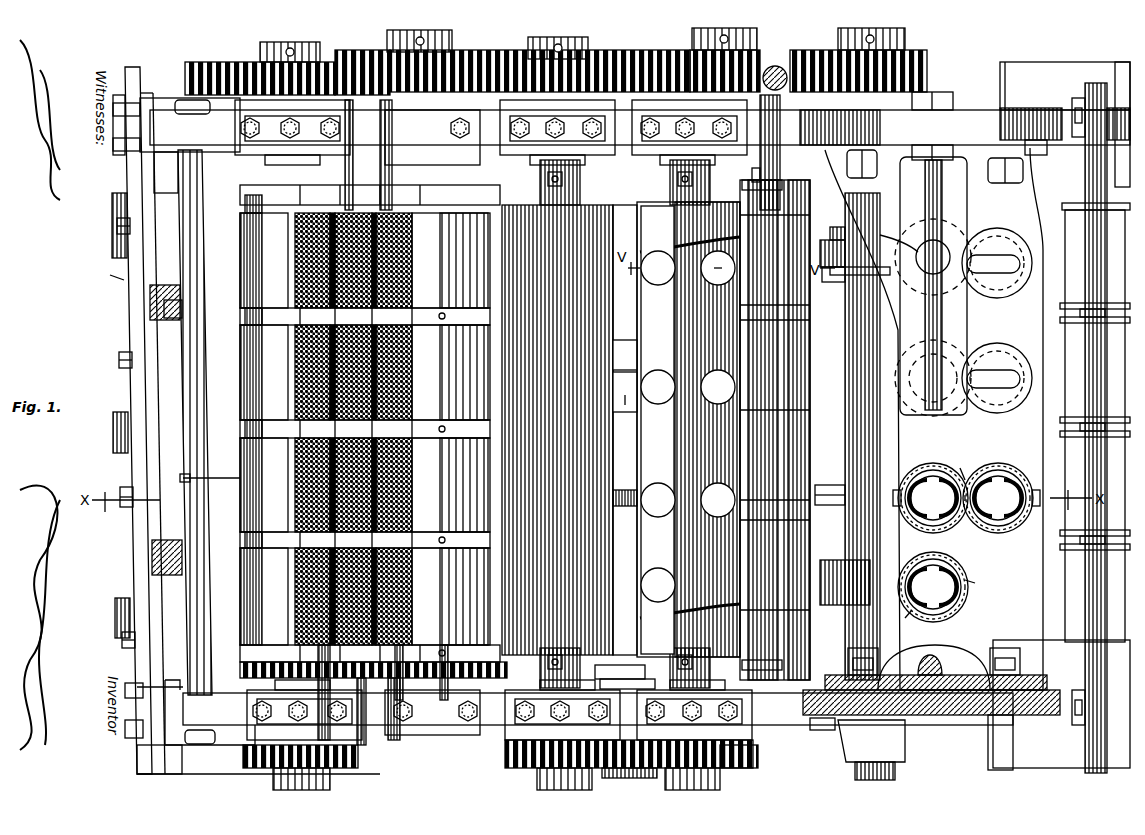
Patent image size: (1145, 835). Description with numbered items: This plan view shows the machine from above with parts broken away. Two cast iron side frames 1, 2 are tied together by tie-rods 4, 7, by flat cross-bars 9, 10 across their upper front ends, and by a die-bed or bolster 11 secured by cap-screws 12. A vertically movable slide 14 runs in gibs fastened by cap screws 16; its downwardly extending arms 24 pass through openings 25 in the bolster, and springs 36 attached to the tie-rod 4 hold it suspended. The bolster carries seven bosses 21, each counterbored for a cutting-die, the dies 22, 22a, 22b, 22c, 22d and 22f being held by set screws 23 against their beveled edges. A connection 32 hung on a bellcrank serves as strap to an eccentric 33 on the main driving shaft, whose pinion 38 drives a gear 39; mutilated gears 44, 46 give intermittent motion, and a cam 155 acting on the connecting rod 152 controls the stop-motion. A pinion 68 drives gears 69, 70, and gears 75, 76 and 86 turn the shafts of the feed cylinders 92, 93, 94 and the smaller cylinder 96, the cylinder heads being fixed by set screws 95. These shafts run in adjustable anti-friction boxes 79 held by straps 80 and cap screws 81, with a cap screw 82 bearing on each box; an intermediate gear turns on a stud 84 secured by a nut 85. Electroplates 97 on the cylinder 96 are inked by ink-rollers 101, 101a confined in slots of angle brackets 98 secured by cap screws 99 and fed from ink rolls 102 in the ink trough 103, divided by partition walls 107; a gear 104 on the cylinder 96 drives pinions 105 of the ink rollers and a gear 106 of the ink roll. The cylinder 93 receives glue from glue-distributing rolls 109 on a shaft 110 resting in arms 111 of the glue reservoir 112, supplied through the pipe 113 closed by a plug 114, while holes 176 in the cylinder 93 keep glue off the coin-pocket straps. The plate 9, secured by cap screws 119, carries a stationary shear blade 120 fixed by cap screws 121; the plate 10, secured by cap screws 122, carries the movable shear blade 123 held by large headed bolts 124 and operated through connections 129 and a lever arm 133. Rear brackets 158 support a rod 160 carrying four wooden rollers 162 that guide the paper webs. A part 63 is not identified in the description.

The side frame 1 is at (635, 125).
The side frame 2 is at (575, 712).
The tie-rod 4 is at (940, 212).
The tie-rod 7 is at (198, 243).
The cross-bar 9 is at (150, 180).
The cross-bar 10 is at (133, 170).
The die-bed or bolster 11 is at (934, 419).
The cap-screws 12 is at (925, 747).
The slide 14 is at (967, 318).
The cap screws 16 is at (934, 655).
The bosses 21 is at (937, 464).
The cutting-die 22 is at (962, 595).
The die 22a is at (915, 482).
The die 22b is at (992, 470).
The die 22c is at (915, 426).
The die 22d is at (997, 352).
The die 22f is at (990, 240).
The set screws 23 is at (966, 470).
The downwardly extending arms 24 is at (960, 675).
The openings 25 is at (934, 667).
The connection 32 is at (838, 276).
The eccentric 33 is at (828, 240).
The springs 36 is at (933, 317).
The pinion 38 is at (925, 62).
The gear 39 is at (775, 66).
The mutilated gear 44 is at (625, 396).
The mutilated gear 46 is at (625, 430).
The bar 63 is at (222, 478).
The pinion 68 is at (360, 50).
The gear 69 is at (225, 62).
The gear 70 is at (505, 62).
The gear 75 is at (358, 753).
The gear 76 is at (505, 753).
The anti-friction metal boxes 79 is at (493, 421).
The strap 80 is at (511, 128).
The cap screws 81 is at (601, 128).
The cap screw 82 is at (493, 420).
The stationary stud 84 is at (632, 778).
The nut 85 is at (628, 662).
The gear 86 is at (748, 762).
The cylinder 92 is at (557, 430).
The cylinder 93 is at (657, 430).
The cylinder 94 is at (688, 429).
The set screws 95 is at (548, 180).
The cylinder 96 is at (245, 206).
The electroplates 97 is at (264, 429).
The angle brackets 98 is at (408, 158).
The cap screws 99 is at (462, 118).
The ink-rollers 101 is at (390, 272).
The ink roller 101a is at (350, 372).
The ink supplying roller 102 is at (451, 429).
The ink trough 103 is at (470, 198).
The gear 104 is at (240, 670).
The pinions 105 is at (315, 665).
The gear 106 is at (440, 680).
The partition walls 107 is at (365, 427).
The glue-distributing rolls 109 is at (770, 355).
The shaft 110 is at (750, 172).
The arms 111 is at (742, 186).
The glue reservoir 112 is at (795, 412).
The pipe 113 is at (782, 100).
The plug 114 is at (820, 731).
The cap screws 119 is at (125, 100).
The stationary shear blade 120 is at (137, 196).
The cap screws 121 is at (130, 222).
The cap screws 122 is at (120, 140).
The movable shear blade 123 is at (105, 270).
The large headed bolts 124 is at (112, 226).
The connections 129 is at (182, 312).
The lever arm 133 is at (191, 426).
The connecting rod 152 is at (830, 487).
The cam 155 is at (625, 484).
The brackets 158 is at (1072, 98).
The rod 160 is at (1092, 85).
The wooden rollers 162 is at (1061, 415).
The holes 176 is at (688, 426).